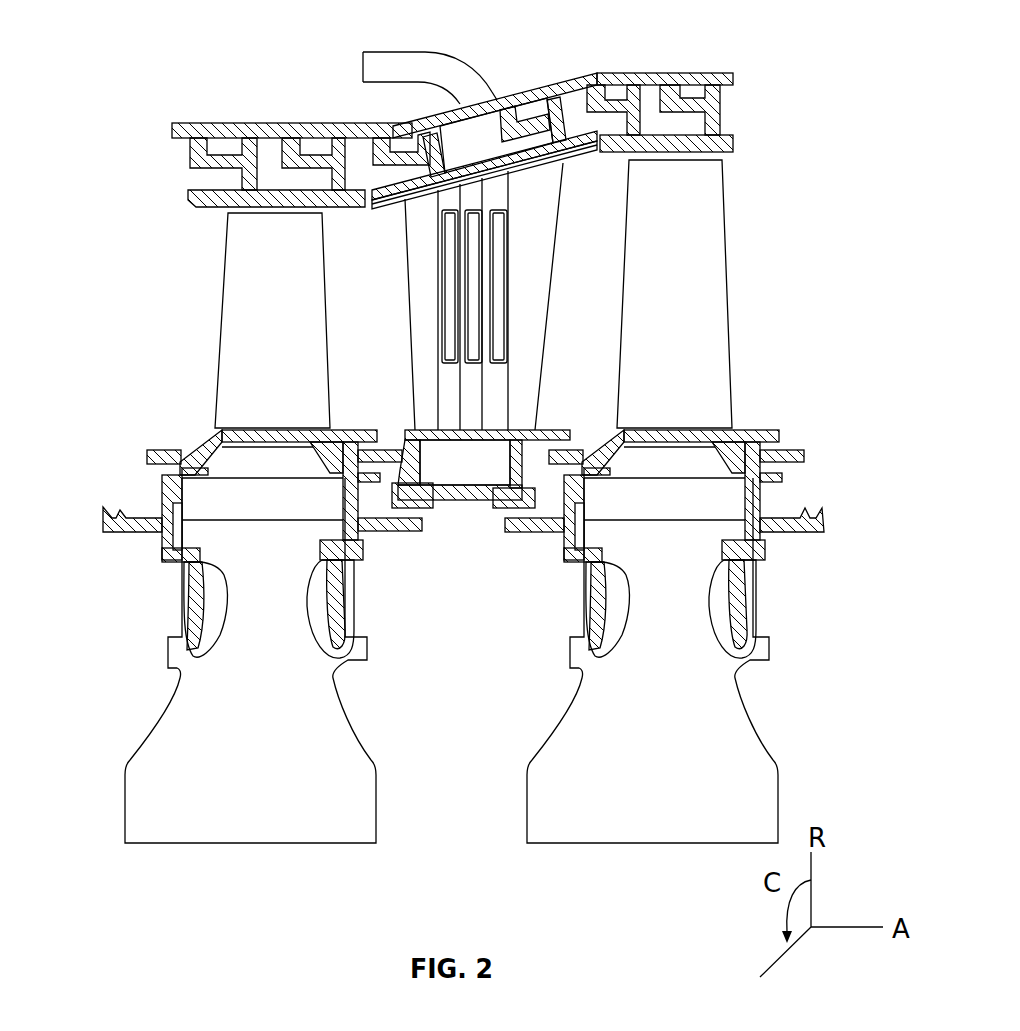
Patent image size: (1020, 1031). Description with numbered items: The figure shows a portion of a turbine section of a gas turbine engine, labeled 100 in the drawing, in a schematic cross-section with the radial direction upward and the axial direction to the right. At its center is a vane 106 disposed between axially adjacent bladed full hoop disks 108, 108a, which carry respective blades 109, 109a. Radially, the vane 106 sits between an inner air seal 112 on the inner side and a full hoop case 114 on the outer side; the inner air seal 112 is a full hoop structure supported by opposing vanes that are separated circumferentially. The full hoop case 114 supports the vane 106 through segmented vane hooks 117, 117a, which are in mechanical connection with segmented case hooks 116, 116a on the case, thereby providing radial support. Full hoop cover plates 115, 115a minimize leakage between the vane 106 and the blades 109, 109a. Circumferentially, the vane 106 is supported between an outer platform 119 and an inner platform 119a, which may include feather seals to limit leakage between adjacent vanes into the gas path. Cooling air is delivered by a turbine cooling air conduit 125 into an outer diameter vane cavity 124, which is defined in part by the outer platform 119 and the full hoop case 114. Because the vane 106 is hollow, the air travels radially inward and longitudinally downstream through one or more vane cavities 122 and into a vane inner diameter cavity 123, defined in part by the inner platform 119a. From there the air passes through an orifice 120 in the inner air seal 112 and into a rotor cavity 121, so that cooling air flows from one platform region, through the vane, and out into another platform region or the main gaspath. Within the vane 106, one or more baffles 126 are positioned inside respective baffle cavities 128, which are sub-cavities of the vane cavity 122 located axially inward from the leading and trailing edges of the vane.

The turbine section 100 is at (166, 40).
The vane 106 is at (481, 296).
The bladed full hoop disk 108 is at (770, 780).
The bladed full hoop disk 108a is at (135, 805).
The blade 109 is at (733, 290).
The blade 109a is at (225, 283).
The inner air seal 112 is at (585, 530).
The full hoop case 114 is at (735, 75).
The full hoop cover plate 115 is at (755, 600).
The full hoop cover plate 115a is at (348, 598).
The segmented case hook 116 is at (525, 108).
The segmented case hook 116a is at (368, 128).
The segmented vane hook 117 is at (560, 82).
The segmented vane hook 117a is at (405, 137).
The outer platform 119 is at (590, 152).
The inner platform 119a is at (413, 443).
The orifice 120 is at (452, 500).
The rotor cavity 121 is at (468, 674).
The vane cavity 122 is at (502, 378).
The vane inner diameter cavity 123 is at (464, 484).
The outer diameter vane cavity 124 is at (479, 126).
The turbine cooling air conduit 125 is at (372, 52).
The baffle 126 is at (446, 275).
The baffle cavity 128 is at (438, 328).